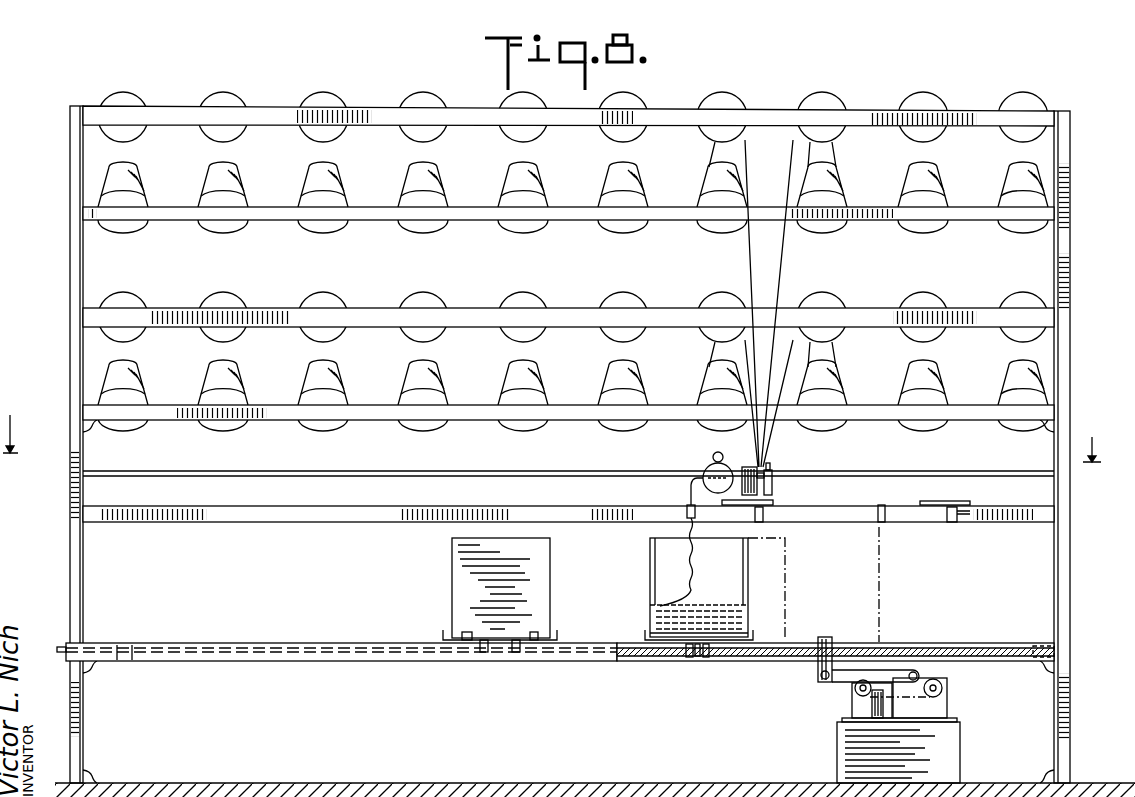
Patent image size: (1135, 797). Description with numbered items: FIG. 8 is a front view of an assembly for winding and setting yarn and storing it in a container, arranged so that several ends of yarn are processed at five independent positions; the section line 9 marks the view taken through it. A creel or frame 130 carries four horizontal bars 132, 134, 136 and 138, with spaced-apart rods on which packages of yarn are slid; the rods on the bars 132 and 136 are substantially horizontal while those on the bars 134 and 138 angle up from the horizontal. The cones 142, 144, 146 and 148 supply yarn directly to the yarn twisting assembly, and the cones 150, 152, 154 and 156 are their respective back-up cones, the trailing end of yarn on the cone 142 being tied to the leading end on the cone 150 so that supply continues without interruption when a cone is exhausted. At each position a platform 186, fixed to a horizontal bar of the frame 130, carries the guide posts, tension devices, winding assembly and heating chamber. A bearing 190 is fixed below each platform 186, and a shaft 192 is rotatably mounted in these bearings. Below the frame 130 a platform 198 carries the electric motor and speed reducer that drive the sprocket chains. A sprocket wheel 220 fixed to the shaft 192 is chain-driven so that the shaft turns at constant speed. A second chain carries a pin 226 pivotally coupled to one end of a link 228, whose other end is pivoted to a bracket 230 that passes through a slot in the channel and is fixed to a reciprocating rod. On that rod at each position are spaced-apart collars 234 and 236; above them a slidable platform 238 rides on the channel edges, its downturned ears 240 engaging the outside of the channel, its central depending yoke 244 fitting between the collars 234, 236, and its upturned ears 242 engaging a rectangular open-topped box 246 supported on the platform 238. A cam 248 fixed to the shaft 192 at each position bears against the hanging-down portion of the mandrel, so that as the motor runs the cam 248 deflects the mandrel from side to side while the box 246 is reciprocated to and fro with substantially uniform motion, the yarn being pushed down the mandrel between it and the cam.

The section line 9- 9 is at (552, 455).
The creel or frame 130 is at (1082, 233).
The horizontal bar 132 is at (975, 108).
The horizontal bar 134 is at (963, 207).
The horizontal bar 136 is at (977, 308).
The horizontal bar 138 is at (977, 405).
The cone 142 is at (732, 97).
The cone 144 is at (840, 98).
The cone 146 is at (714, 293).
The cone 148 is at (829, 296).
The back-up cone 150 is at (704, 180).
The back-up cone 152 is at (841, 178).
The back-up cone 154 is at (703, 378).
The back-up cone 156 is at (840, 382).
The platform 186 is at (773, 502).
The bearing 190 is at (763, 522).
The shaft 192 is at (922, 523).
The platform 198 is at (947, 737).
The sprocket wheel 220 is at (883, 523).
The pin 226 is at (915, 671).
The link 228 is at (838, 682).
The bracket 230 is at (818, 640).
The collar 234 is at (686, 660).
The collar 236 is at (705, 662).
The slidable platform 238 is at (753, 635).
The downturned ears 240 is at (537, 645).
The upturned ears 242 is at (513, 652).
The central depending yoke 244 is at (697, 662).
The box 246 is at (752, 575).
The cam 248 is at (688, 510).